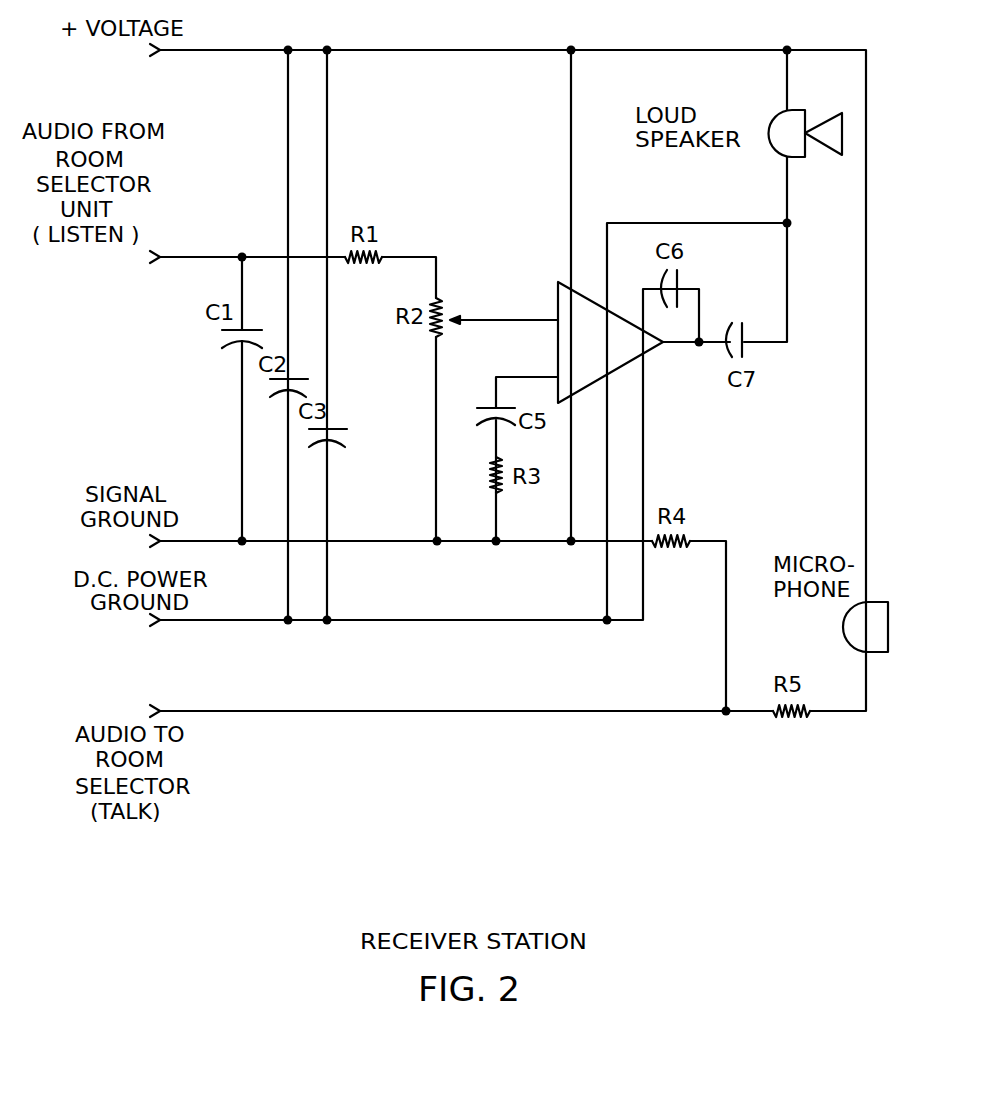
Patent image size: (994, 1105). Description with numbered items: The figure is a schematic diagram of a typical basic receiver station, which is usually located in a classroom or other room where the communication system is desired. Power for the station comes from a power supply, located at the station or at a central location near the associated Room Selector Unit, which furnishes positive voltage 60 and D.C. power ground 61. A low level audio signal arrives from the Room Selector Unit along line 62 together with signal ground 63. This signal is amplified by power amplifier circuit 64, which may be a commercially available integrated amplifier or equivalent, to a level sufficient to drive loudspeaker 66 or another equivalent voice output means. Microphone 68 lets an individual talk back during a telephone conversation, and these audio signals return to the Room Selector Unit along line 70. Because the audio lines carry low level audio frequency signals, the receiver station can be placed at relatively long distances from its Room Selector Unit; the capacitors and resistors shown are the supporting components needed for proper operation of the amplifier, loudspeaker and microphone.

The positive voltage 60 is at (157, 63).
The D.C. power ground 61 is at (244, 620).
The line 62 is at (150, 262).
The signal ground 63 is at (226, 540).
The power amplifier circuit 64 is at (610, 342).
The loudspeaker 66 is at (766, 133).
The microphone 68 is at (840, 632).
The line 70 is at (205, 710).